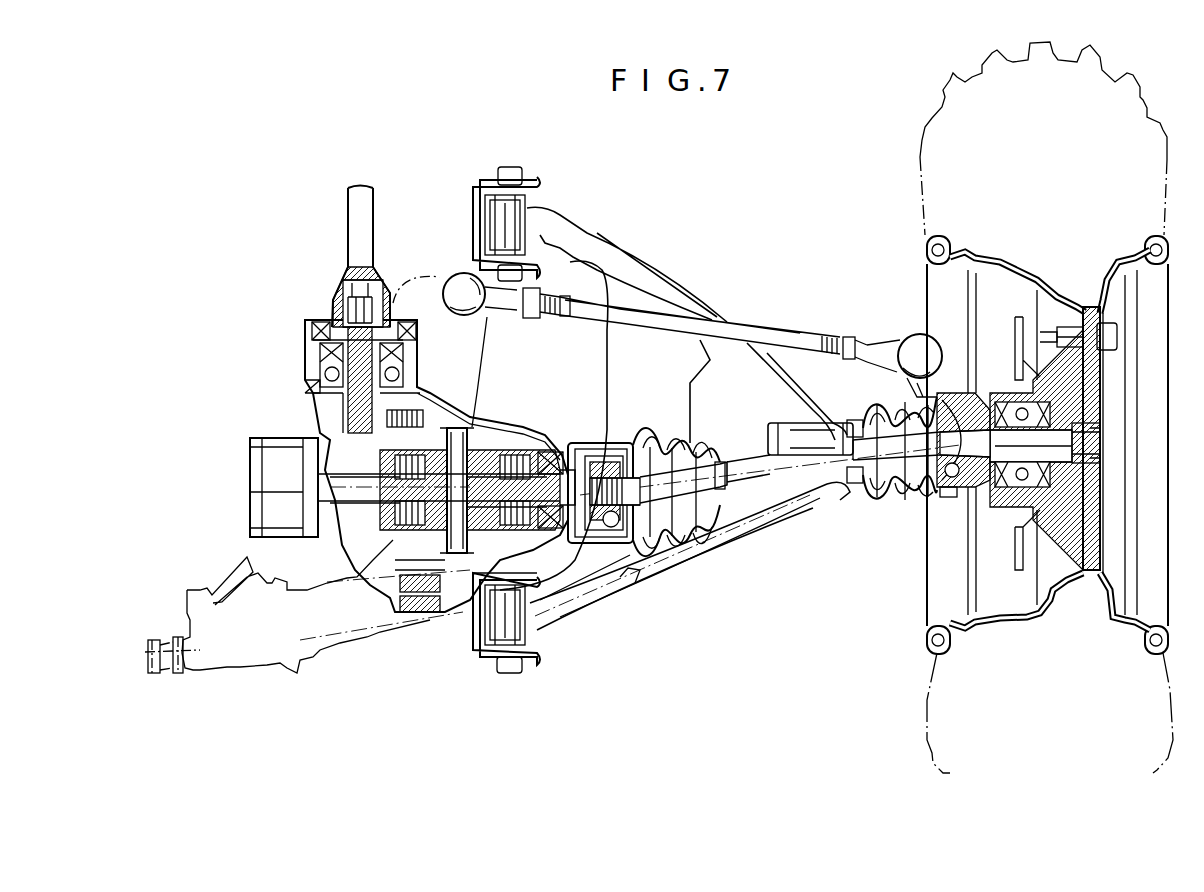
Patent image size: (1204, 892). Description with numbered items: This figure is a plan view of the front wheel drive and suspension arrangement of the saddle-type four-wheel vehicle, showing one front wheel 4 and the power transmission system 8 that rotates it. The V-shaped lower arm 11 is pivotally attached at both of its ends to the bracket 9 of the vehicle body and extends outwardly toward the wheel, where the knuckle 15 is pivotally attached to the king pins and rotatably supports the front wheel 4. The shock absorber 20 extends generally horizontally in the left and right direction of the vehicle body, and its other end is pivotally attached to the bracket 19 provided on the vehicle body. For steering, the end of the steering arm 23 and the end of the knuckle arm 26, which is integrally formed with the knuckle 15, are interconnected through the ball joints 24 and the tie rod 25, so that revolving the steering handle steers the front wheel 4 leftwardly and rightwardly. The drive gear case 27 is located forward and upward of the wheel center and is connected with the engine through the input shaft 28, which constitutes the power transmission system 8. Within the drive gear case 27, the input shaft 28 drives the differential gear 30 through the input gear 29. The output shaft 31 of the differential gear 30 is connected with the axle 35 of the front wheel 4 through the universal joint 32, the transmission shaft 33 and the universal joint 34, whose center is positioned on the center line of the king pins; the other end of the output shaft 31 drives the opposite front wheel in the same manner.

The front wheel 4 is at (1160, 240).
The power transmission system 8 is at (318, 250).
The bracket 9 is at (472, 205).
The lower arm 11 is at (750, 525).
The knuckle 15 is at (998, 395).
The bracket 19 is at (165, 675).
The shock absorber 20 is at (385, 615).
The steering arm 23 is at (463, 357).
The ball joint 24 is at (462, 272).
The tie rod 25 is at (752, 325).
The knuckle arm 26 is at (920, 383).
The drive gear case 27 is at (357, 540).
The input shaft 28 is at (372, 215).
The input gear 29 is at (325, 405).
The differential gear 30 is at (483, 427).
The output shaft 31 is at (282, 497).
The universal joint 32 is at (612, 460).
The transmission shaft 33 is at (805, 475).
The universal joint 34 is at (942, 497).
The axle 35 is at (1105, 440).